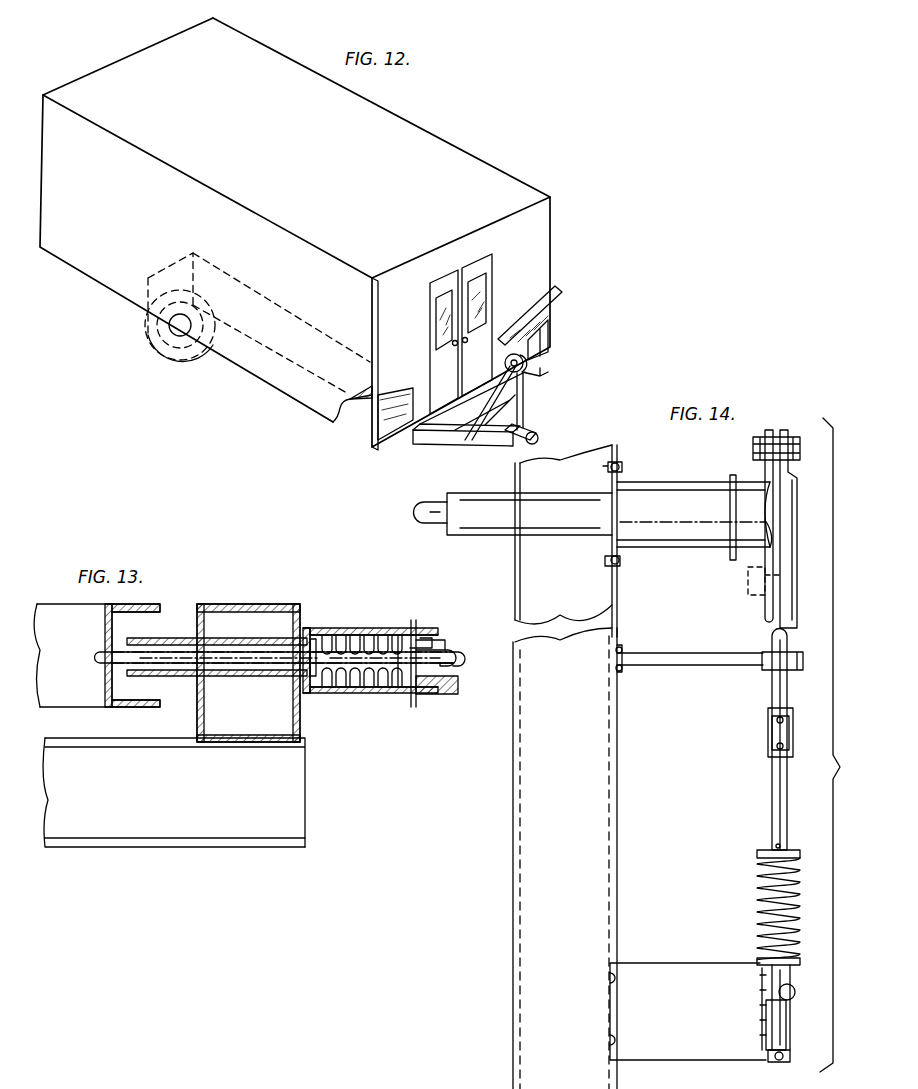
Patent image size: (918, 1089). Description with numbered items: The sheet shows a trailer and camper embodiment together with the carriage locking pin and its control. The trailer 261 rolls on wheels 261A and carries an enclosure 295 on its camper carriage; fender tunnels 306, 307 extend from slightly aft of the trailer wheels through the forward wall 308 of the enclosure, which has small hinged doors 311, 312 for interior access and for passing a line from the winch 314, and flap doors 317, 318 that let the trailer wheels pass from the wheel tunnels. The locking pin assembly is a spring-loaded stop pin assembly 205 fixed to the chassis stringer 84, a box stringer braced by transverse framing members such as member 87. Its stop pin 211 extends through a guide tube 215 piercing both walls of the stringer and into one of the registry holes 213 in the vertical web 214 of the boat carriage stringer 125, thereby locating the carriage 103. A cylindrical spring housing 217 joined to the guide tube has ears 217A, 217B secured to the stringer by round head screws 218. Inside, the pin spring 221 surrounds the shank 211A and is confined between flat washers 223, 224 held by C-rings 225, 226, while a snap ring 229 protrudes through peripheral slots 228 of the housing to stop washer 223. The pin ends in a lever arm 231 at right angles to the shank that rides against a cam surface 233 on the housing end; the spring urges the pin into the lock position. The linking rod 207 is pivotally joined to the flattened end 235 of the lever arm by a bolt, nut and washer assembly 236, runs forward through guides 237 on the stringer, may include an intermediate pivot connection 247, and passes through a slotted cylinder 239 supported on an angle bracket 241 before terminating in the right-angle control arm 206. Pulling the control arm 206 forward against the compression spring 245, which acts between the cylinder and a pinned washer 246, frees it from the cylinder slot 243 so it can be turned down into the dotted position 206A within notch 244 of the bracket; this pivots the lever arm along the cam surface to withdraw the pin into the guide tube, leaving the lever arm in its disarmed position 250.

In FIG. 12, the enclosure 295 is at (455, 145).
In FIG. 12, the wheels 261A is at (200, 358).
In FIG. 12, the fender tunnel 307 is at (340, 412).
In FIG. 12, the flap door 318 is at (378, 447).
In FIG. 12, the forward wall 308 is at (528, 243).
In FIG. 12, the small hinged door 312 is at (440, 283).
In FIG. 12, the small hinged door 311 is at (475, 268).
In FIG. 12, the flap door 317 is at (530, 300).
In FIG. 12, the fender tunnel 306 is at (545, 336).
In FIG. 12, the winch 314 is at (535, 358).
In FIG. 12, the trailer 261 is at (476, 445).
In FIG. 13, the carriage 103 is at (60, 602).
In FIG. 13, the registry hole 213 is at (98, 652).
In FIG. 13, the boat carriage stringer 125 is at (125, 708).
In FIG. 13, the vertical web 214 is at (104, 678).
In FIG. 13, the stop pin 211 is at (222, 652).
In FIG. 14, the stop pin 211 is at (440, 523).
In FIG. 13, the guide tube 215 is at (230, 680).
In FIG. 14, the guide tube 215 is at (497, 537).
In FIG. 13, the chassis stringer 84 is at (300, 715).
In FIG. 14, the chassis stringer 84 is at (515, 768).
In FIG. 13, the transverse framing member 87 is at (160, 828).
In FIG. 13, the flat washer 224 is at (308, 650).
In FIG. 13, the stop pin assembly 205 is at (340, 622).
In FIG. 13, the spring housing 217 is at (360, 628).
In FIG. 14, the spring housing 217 is at (710, 548).
In FIG. 13, the pin spring 221 is at (366, 694).
In FIG. 13, the C-ring 225 is at (313, 688).
In FIG. 13, the shank 211A is at (372, 652).
In FIG. 13, the peripheral slot 228 is at (414, 620).
In FIG. 14, the peripheral slot 228 is at (730, 520).
In FIG. 13, the snap ring 229 is at (418, 635).
In FIG. 13, the C-ring 226 is at (425, 640).
In FIG. 13, the cam surface 233 is at (440, 644).
In FIG. 14, the cam surface 233 is at (782, 530).
In FIG. 13, the lever arm 231 is at (450, 657).
In FIG. 14, the lever arm 231 is at (768, 490).
In FIG. 13, the flat washer 223 is at (402, 694).
In FIG. 14, the ear 217A is at (622, 462).
In FIG. 14, the round head screw 218 is at (622, 467).
In FIG. 14, the ear 217B is at (622, 566).
In FIG. 14, the flattened end 235 is at (768, 432).
In FIG. 14, the bolt, nut and washer assembly 236 is at (790, 430).
In FIG. 14, the disarmed position 250 is at (770, 595).
In FIG. 14, the guide 237 is at (692, 666).
In FIG. 14, the linking rod 207 is at (773, 775).
In FIG. 14, the pivot connection 247 is at (768, 725).
In FIG. 14, the pinned washer 246 is at (770, 848).
In FIG. 14, the compression spring 245 is at (758, 878).
In FIG. 14, the angle bracket 241 is at (665, 965).
In FIG. 14, the control arm 206 is at (772, 992).
In FIG. 14, the slotted cylinder 239 is at (762, 1010).
In FIG. 14, the cylinder slot 243 is at (772, 1030).
In FIG. 14, the notch 244 is at (778, 1062).
In FIG. 14, the dotted position 206A is at (772, 1058).